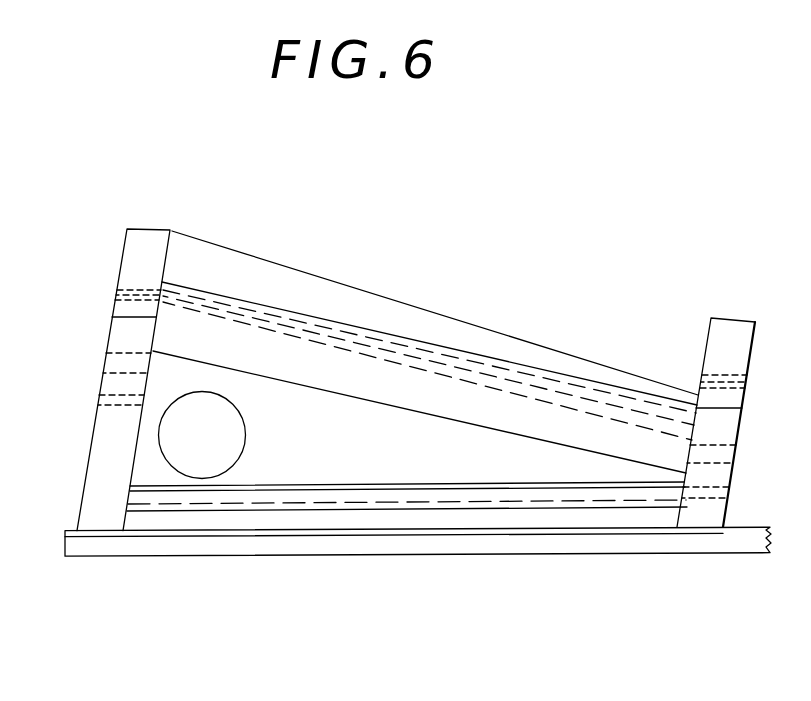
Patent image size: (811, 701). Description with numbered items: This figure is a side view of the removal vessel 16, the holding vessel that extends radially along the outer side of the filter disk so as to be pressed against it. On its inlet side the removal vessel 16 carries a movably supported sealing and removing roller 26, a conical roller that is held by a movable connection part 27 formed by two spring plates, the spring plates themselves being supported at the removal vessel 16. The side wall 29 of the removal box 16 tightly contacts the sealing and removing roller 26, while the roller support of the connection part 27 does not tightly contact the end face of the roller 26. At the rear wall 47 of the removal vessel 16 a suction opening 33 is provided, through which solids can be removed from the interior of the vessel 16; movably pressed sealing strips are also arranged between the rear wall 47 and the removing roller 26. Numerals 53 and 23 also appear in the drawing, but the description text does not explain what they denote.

The removal vessel 16 is at (425, 332).
The sealing and removing roller 26 is at (252, 272).
The connection part 27 is at (432, 357).
The side wall 29 is at (147, 270).
The suction opening 33 is at (202, 433).
The rear wall 47 is at (372, 458).
The support member 53 is at (11, 336).
The frame member 23 is at (5, 416).